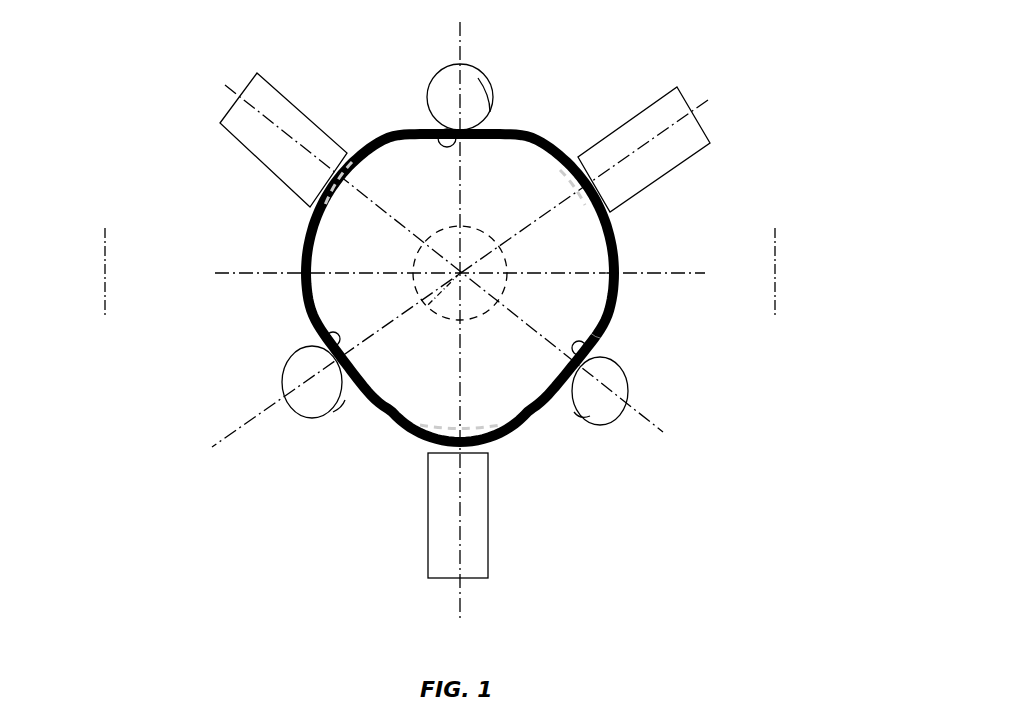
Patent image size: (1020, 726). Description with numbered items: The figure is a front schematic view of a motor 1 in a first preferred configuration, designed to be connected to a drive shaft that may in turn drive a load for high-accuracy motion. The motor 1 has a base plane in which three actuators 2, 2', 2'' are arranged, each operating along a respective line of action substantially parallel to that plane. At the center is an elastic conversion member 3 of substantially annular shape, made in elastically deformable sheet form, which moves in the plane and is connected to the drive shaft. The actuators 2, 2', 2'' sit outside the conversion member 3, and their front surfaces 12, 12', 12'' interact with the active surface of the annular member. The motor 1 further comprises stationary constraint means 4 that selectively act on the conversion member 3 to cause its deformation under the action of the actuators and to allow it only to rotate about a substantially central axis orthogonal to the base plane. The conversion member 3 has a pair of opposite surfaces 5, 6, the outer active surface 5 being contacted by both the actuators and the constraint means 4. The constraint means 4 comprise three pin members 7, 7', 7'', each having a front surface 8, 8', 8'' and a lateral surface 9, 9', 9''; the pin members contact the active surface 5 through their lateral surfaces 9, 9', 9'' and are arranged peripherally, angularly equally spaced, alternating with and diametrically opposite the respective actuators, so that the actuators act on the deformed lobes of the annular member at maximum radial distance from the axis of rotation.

The motor 1 is at (398, 326).
The actuator 2 is at (644, 129).
The actuator 2' is at (283, 126).
The actuator 2'' is at (481, 515).
The elastic conversion member 3 is at (538, 432).
The stationary constraint means 4 is at (620, 343).
The outer active surface 5 is at (616, 262).
The opposite surface 6 is at (592, 292).
The pin member 7 is at (472, 78).
The pin member 7' is at (627, 391).
The pin member 7'' is at (280, 379).
The front surface 8 is at (420, 109).
The front surface 8' is at (620, 350).
The front surface 8'' is at (297, 324).
The lateral surface 9 is at (501, 92).
The lateral surface 9' is at (585, 443).
The lateral surface 9'' is at (326, 428).
The front surface of the actuator 12 is at (559, 211).
The front surface of the actuator 12' is at (344, 146).
The front surface of the actuator 12'' is at (466, 398).